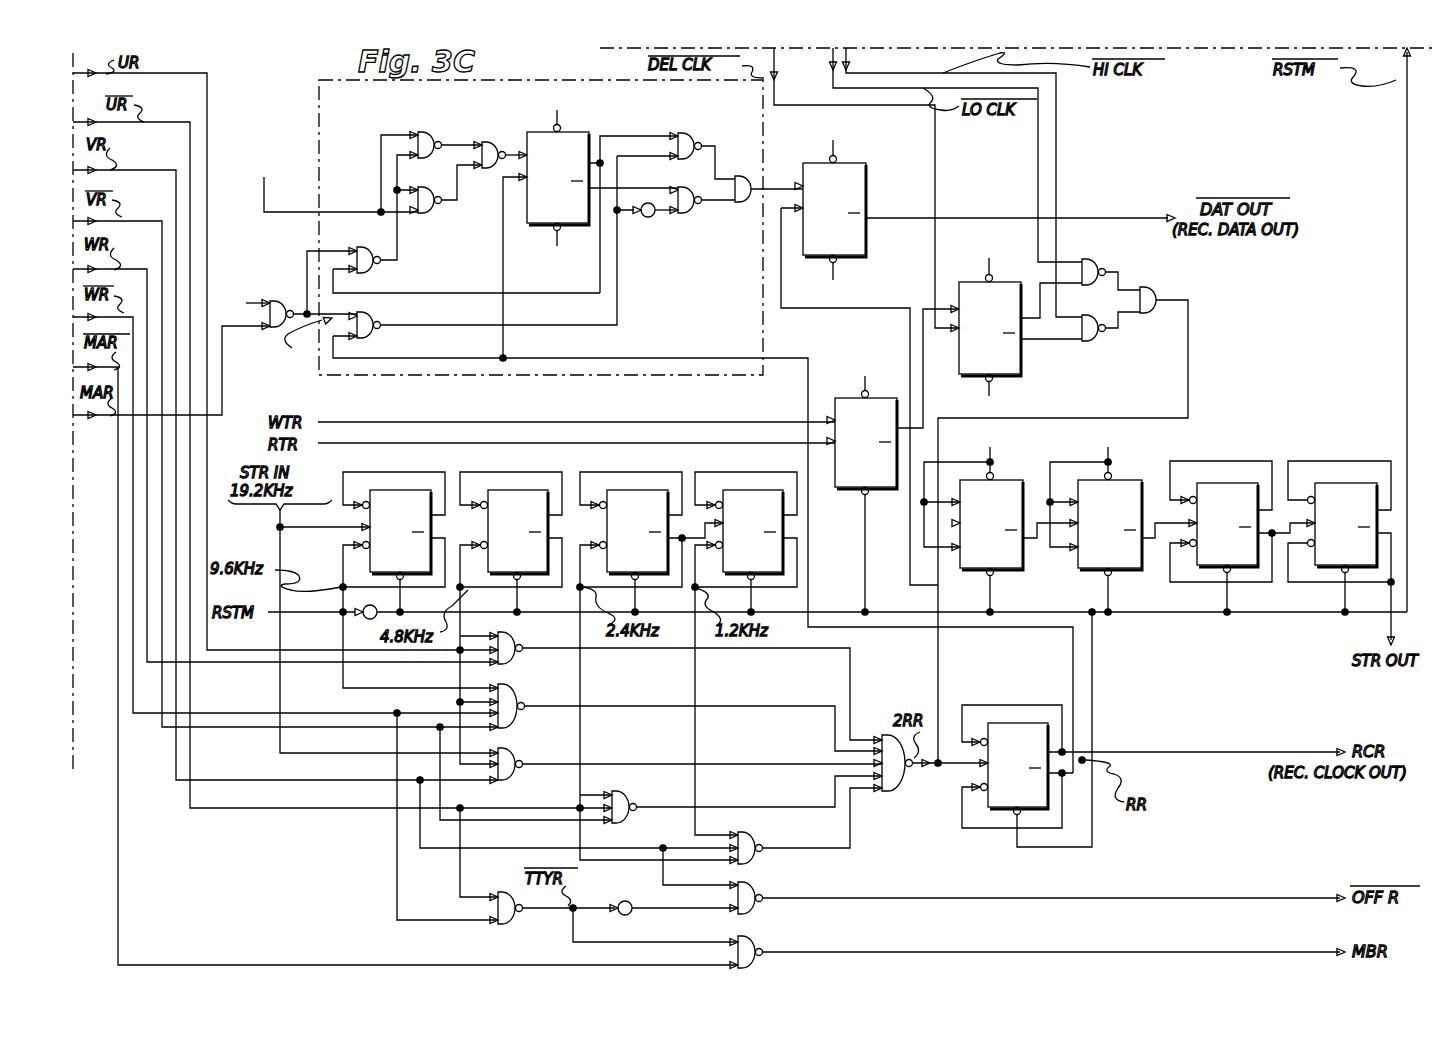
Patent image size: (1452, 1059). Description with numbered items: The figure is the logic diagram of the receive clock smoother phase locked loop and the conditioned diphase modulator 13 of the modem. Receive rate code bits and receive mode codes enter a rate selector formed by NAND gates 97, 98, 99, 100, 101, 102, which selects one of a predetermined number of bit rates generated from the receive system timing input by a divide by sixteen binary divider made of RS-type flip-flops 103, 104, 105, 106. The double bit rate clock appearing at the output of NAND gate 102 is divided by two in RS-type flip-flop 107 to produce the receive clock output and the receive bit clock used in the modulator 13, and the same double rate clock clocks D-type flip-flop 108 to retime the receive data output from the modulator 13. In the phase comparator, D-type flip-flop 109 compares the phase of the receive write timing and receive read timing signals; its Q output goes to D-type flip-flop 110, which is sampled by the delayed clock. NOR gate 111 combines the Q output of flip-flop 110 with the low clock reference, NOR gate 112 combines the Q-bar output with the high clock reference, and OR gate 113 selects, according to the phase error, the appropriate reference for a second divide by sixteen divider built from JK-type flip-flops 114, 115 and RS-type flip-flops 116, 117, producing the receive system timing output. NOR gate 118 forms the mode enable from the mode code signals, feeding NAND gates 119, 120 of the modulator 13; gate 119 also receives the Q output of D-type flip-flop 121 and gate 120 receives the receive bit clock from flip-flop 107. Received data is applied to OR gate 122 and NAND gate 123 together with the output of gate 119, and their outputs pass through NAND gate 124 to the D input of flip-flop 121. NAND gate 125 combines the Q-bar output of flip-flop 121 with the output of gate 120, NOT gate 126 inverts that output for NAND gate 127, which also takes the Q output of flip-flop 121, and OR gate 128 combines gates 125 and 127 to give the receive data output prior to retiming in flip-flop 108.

The diphase modulator 13 is at (319, 100).
The NAND gate 97 is at (512, 654).
The NAND gate 98 is at (512, 712).
The NAND gate 99 is at (512, 772).
The NAND gate 100 is at (626, 814).
The NAND gate 101 is at (750, 848).
The NAND gate 102 is at (895, 792).
The RS-type flip-flop 103 is at (412, 492).
The RS-type flip-flop 104 is at (530, 492).
The RS-type flip-flop 105 is at (635, 492).
The RS-type flip-flop 106 is at (757, 492).
The RS-type flip-flop 107 is at (1010, 723).
The D-type flip-flop 108 is at (860, 186).
The D-type flip-flop 109 is at (848, 486).
The D-type flip-flop 110 is at (1013, 364).
The NOR gate 111 is at (1090, 264).
The NOR gate 112 is at (1094, 342).
The OR gate 113 is at (1155, 296).
The JK-type flip-flop 114 is at (970, 568).
The JK-type flip-flop 115 is at (1082, 568).
The RS-type flip-flop 116 is at (1210, 562).
The RS-type flip-flop 117 is at (1328, 562).
The NOR gate 118 is at (280, 298).
The NAND gate 119 is at (372, 236).
The NAND gate 120 is at (373, 337).
The D-type flip-flop 121 is at (580, 139).
The OR gate 122 is at (436, 145).
The NAND gate 123 is at (434, 214).
The NAND gate 124 is at (496, 146).
The NAND gate 125 is at (686, 134).
The NOT gate 126 is at (648, 217).
The NAND gate 127 is at (693, 214).
The OR gate 128 is at (742, 176).